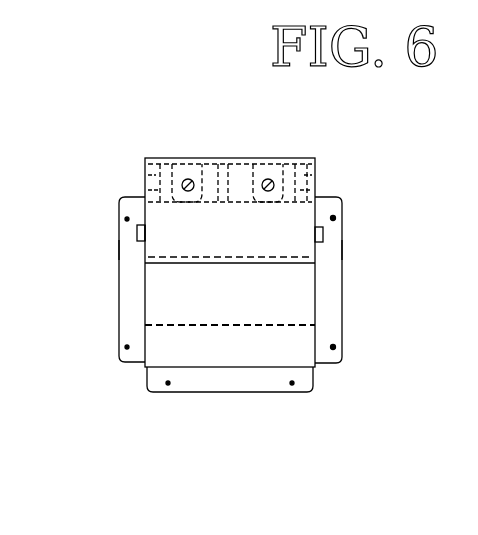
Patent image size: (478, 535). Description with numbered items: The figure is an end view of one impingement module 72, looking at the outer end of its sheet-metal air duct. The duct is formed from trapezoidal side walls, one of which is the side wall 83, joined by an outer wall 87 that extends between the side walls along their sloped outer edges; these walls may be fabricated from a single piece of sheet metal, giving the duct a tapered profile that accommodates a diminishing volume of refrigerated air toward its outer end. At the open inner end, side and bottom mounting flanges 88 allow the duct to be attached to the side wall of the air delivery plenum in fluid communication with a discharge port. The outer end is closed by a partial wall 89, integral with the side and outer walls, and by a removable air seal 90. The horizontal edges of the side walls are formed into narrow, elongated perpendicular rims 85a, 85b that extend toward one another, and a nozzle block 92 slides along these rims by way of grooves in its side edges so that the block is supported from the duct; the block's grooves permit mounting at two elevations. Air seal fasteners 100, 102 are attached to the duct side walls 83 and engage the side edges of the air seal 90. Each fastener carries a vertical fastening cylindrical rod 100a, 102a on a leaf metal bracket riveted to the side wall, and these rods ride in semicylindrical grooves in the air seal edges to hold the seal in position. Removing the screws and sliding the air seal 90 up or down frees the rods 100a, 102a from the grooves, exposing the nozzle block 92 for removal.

The module 72 is at (222, 112).
The side wall 83 is at (147, 235).
The perpendicular rim 85a is at (152, 199).
The perpendicular rim 85b is at (304, 199).
The outer wall 87 is at (155, 352).
The mounting flanges 88 is at (118, 273).
The partial wall 89 is at (233, 302).
The air seal 90 is at (295, 223).
The nozzle block 92 is at (263, 154).
The air seal fastener 100 is at (135, 232).
The fastening cylindrical rod 100a is at (118, 250).
The air seal fastener 102 is at (329, 231).
The fastening cylindrical rod 102a is at (323, 238).